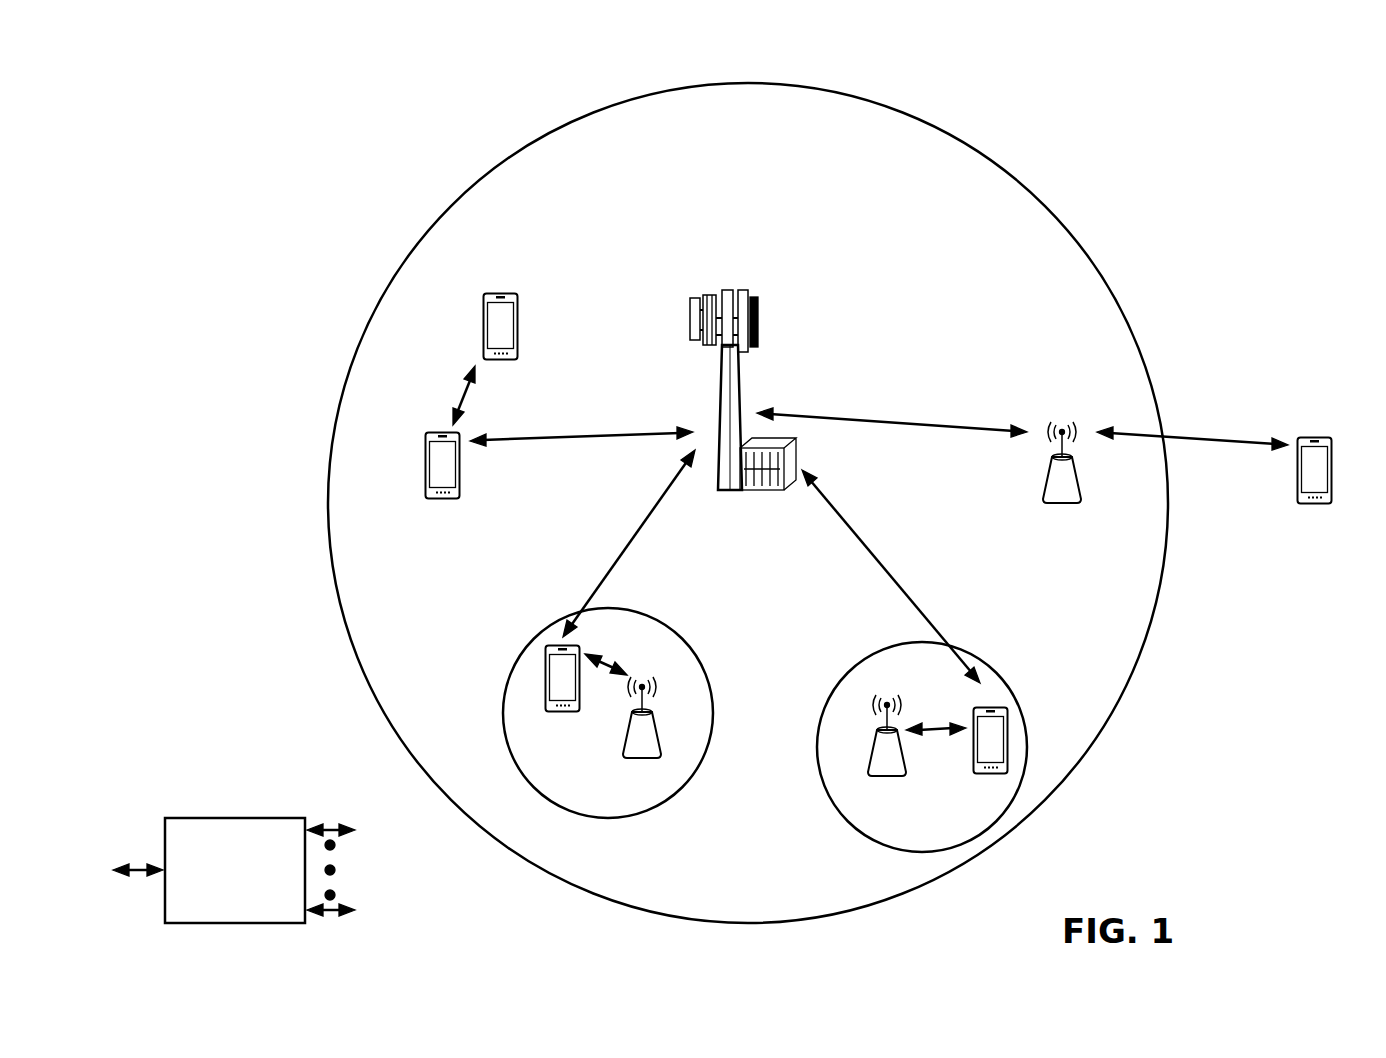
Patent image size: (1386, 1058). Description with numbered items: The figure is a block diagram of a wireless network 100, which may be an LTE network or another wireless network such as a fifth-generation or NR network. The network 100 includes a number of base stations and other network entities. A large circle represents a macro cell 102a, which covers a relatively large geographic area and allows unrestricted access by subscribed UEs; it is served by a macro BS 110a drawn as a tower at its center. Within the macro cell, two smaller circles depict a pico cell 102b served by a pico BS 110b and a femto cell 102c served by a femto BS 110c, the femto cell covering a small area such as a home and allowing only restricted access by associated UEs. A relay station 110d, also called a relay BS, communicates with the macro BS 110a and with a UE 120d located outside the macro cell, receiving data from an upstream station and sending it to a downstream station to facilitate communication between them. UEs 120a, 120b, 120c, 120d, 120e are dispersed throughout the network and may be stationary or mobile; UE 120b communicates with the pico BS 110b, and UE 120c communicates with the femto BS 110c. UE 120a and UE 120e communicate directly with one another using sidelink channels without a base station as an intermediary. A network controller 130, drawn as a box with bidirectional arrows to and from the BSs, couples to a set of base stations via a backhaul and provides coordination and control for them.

The wireless network 100 is at (212, 76).
The macro cell 102a is at (1025, 187).
The pico cell 102b is at (696, 652).
The femto cell 102c is at (862, 662).
The macro base station 110a is at (735, 285).
The pico base station 110b is at (664, 735).
The femto base station 110c is at (870, 757).
The relay station 110d is at (1064, 425).
The user equipment 120a is at (425, 465).
The user equipment 120b is at (553, 712).
The user equipment 120c is at (973, 773).
The user equipment 120d is at (1327, 437).
The user equipment 120e is at (484, 315).
The network controller 130 is at (234, 818).